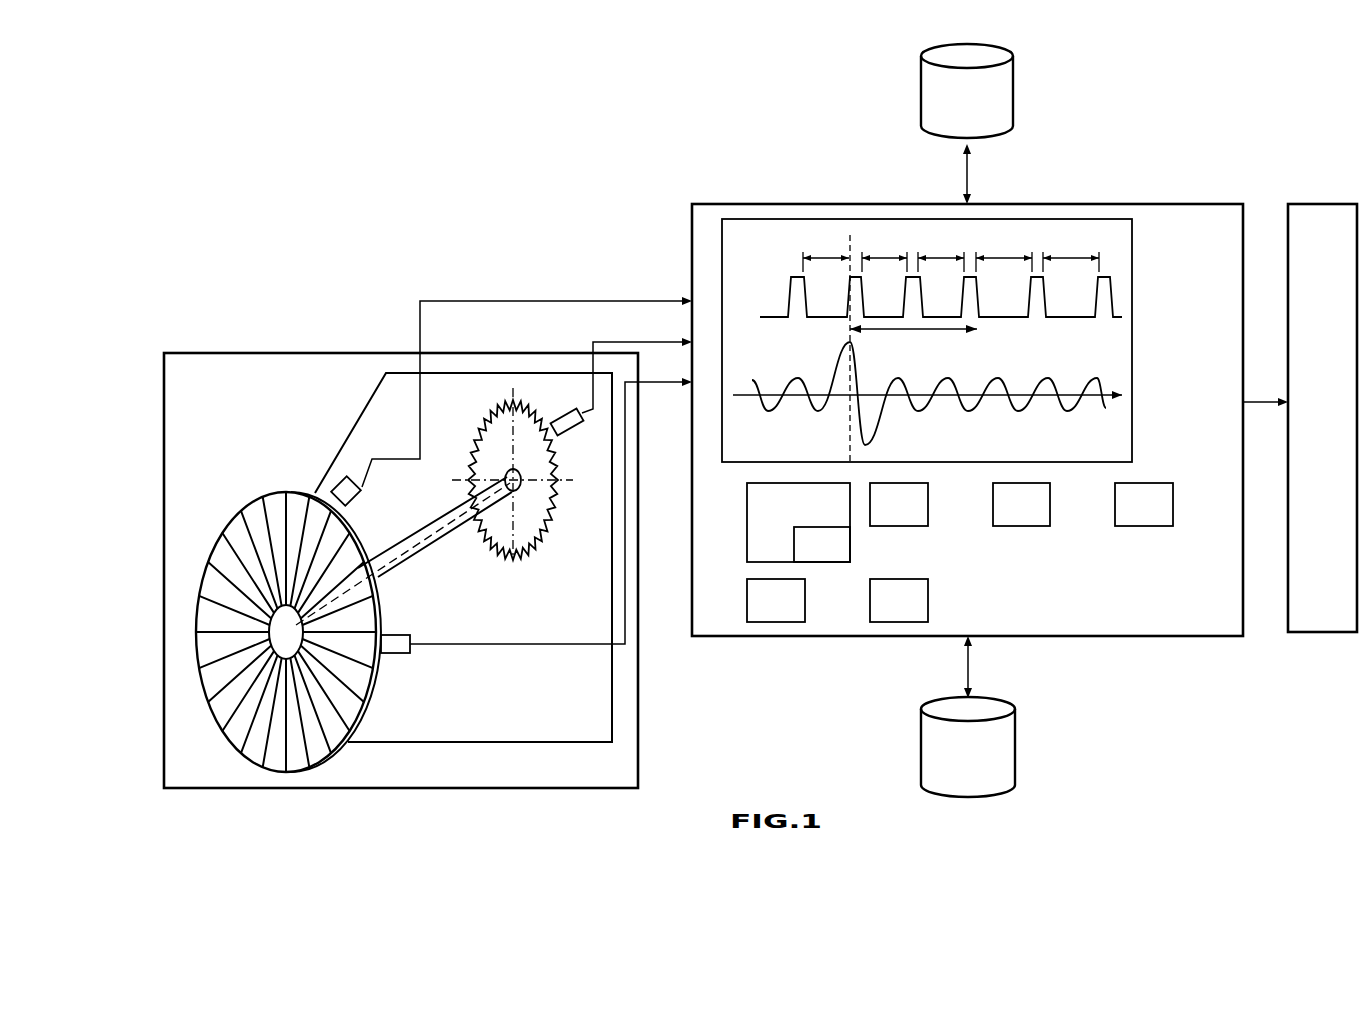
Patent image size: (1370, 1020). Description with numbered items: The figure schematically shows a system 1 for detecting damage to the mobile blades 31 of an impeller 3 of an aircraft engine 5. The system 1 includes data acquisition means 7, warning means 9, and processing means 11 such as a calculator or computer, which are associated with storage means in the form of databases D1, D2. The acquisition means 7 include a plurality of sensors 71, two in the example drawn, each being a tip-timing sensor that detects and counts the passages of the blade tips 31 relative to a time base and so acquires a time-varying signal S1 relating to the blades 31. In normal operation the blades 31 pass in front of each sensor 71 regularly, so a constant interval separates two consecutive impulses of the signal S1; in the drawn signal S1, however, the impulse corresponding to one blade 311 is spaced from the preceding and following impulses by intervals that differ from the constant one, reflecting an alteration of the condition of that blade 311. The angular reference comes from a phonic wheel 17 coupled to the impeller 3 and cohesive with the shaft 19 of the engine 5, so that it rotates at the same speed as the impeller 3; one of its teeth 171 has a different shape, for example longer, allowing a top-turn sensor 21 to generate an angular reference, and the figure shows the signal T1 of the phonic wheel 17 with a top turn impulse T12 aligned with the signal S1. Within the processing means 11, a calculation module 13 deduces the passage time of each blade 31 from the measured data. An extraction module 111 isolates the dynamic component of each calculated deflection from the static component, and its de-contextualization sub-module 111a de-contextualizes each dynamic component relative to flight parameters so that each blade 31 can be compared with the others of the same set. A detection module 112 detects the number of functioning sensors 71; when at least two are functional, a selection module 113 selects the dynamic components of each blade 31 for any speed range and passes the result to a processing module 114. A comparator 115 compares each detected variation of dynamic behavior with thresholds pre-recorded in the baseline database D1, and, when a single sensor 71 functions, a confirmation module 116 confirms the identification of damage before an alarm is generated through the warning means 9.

The system for detecting damage 1 is at (316, 128).
The impeller 3 is at (281, 608).
The mobile blades 31 is at (225, 693).
The blade 311 is at (305, 513).
The aircraft engine 5 is at (640, 648).
The data acquisition means 7 is at (555, 727).
The sensors 71 is at (354, 497).
The shaft 19 is at (440, 532).
The phonic wheel 17 is at (514, 480).
The tooth 171 is at (537, 410).
The sensor 21 is at (577, 427).
The processing means 11 is at (1130, 203).
The calculation module 13 is at (953, 340).
The time-varying signal S1 is at (939, 297).
The signal of the phonic wheel T1 is at (762, 392).
The top turn impulse T12 is at (857, 366).
The extraction module 111 is at (792, 514).
The de-contextualization sub-module 111a is at (843, 554).
The detection module 112 is at (915, 514).
The selection module 113 is at (1038, 514).
The processing module 114 is at (1160, 514).
The comparator 115 is at (792, 610).
The confirmation module 116 is at (915, 610).
The warning means 9 is at (1325, 203).
The baseline data base D1 is at (1013, 92).
The database D2 is at (1015, 752).